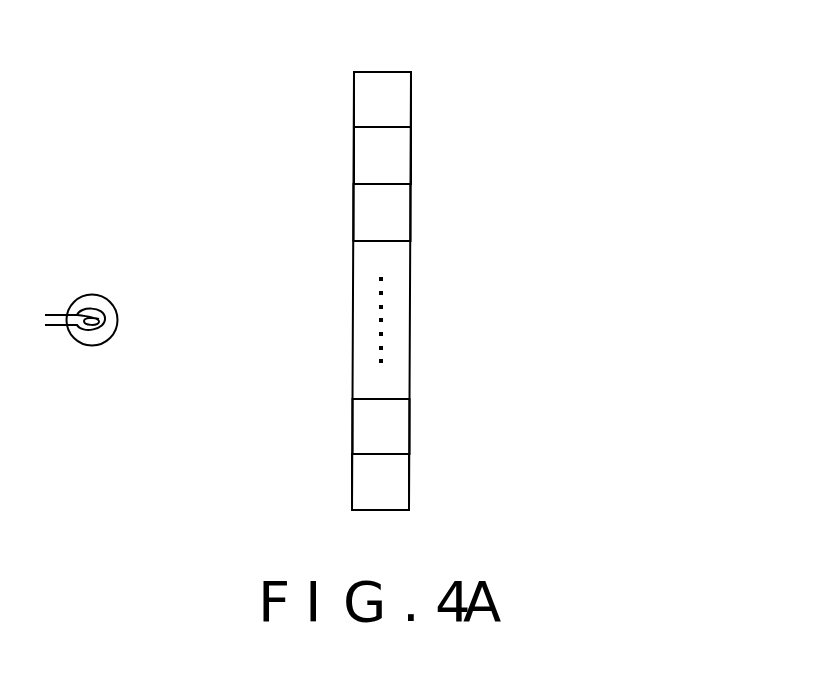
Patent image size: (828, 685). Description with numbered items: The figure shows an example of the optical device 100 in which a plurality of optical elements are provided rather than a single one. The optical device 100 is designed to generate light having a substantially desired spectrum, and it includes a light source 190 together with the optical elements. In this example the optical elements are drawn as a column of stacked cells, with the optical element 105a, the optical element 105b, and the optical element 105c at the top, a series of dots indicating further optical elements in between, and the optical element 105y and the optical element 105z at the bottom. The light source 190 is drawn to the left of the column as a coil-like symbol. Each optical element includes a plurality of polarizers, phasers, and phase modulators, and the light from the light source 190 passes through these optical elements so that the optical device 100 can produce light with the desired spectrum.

The optical device 100 is at (765, 38).
The optical element 105a is at (360, 103).
The optical element 105b is at (360, 158).
The optical element 105c is at (360, 215).
The optical element 105y is at (358, 423).
The optical element 105z is at (358, 479).
The light source 190 is at (92, 346).